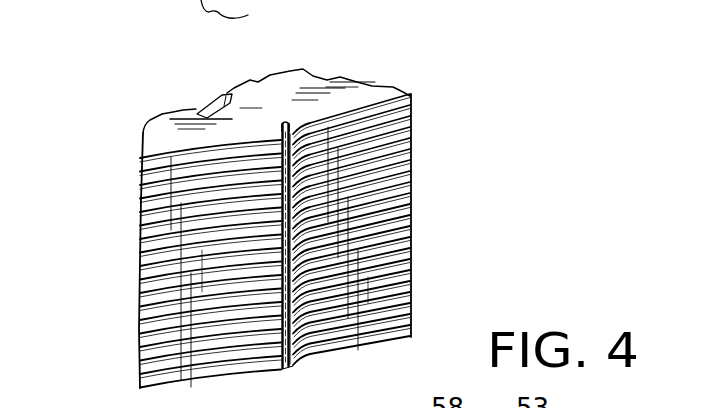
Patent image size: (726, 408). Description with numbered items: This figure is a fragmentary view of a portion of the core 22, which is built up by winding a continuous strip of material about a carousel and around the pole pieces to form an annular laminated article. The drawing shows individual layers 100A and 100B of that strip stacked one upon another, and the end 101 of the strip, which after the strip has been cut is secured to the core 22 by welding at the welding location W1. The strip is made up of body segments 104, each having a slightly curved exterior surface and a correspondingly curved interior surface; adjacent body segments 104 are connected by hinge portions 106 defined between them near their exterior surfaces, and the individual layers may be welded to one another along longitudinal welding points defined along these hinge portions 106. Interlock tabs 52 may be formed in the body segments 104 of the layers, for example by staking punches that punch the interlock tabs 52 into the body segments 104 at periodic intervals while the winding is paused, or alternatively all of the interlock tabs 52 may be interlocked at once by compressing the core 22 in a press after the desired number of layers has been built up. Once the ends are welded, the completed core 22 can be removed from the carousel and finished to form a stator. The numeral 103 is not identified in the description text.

The core 22 is at (455, 132).
The interlock tabs 52 is at (212, 103).
The individual layer 100A is at (410, 230).
The individual layer 100B is at (413, 239).
The end of strip 101 is at (315, 364).
The slot 103 is at (283, 228).
The body segments 104 is at (176, 127).
The hinge portions 106 is at (282, 119).
The welding location W1 is at (288, 372).